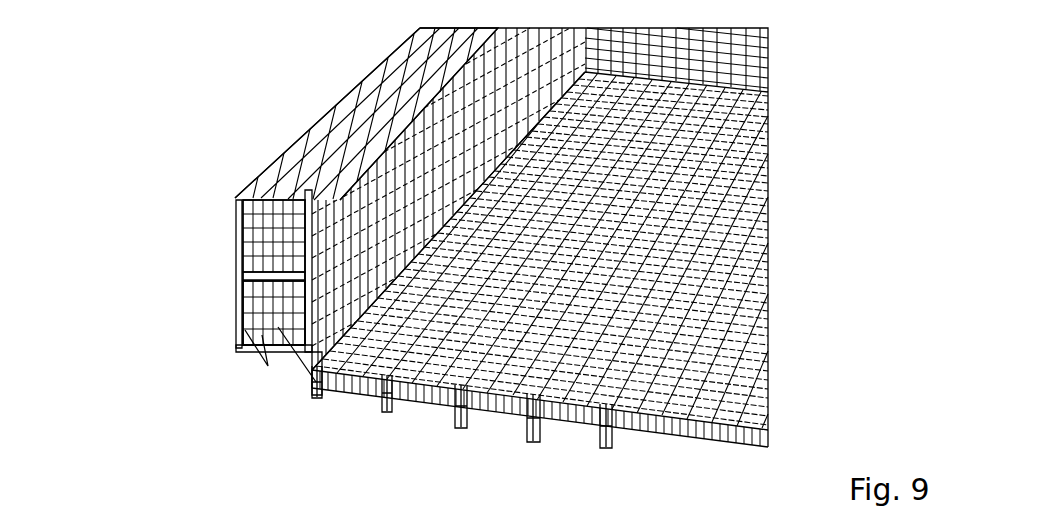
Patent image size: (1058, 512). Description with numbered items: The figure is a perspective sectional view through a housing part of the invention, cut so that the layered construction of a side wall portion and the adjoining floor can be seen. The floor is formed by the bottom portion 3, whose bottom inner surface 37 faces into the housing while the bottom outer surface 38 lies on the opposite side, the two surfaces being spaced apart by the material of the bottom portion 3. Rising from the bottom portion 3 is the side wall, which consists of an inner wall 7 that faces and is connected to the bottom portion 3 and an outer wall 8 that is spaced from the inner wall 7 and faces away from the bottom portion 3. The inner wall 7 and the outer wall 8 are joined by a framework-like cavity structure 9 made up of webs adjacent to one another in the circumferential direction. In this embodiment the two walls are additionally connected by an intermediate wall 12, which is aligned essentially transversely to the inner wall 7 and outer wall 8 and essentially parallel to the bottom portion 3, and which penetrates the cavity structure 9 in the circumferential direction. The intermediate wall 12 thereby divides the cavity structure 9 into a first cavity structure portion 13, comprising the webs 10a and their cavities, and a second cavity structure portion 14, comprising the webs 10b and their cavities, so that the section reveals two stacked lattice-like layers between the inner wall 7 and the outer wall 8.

The bottom portion 3 is at (410, 386).
The inner wall 7 is at (236, 250).
The outer wall 8 is at (303, 300).
The cavity structure 9 is at (587, 194).
The webs 10a is at (303, 164).
The webs 10b is at (272, 316).
The intermediate wall 12 is at (262, 275).
The first cavity structure portion 13 is at (272, 236).
The second cavity structure portion 14 is at (283, 322).
The bottom inner surface 37 is at (335, 349).
The bottom outer surface 38 is at (440, 410).